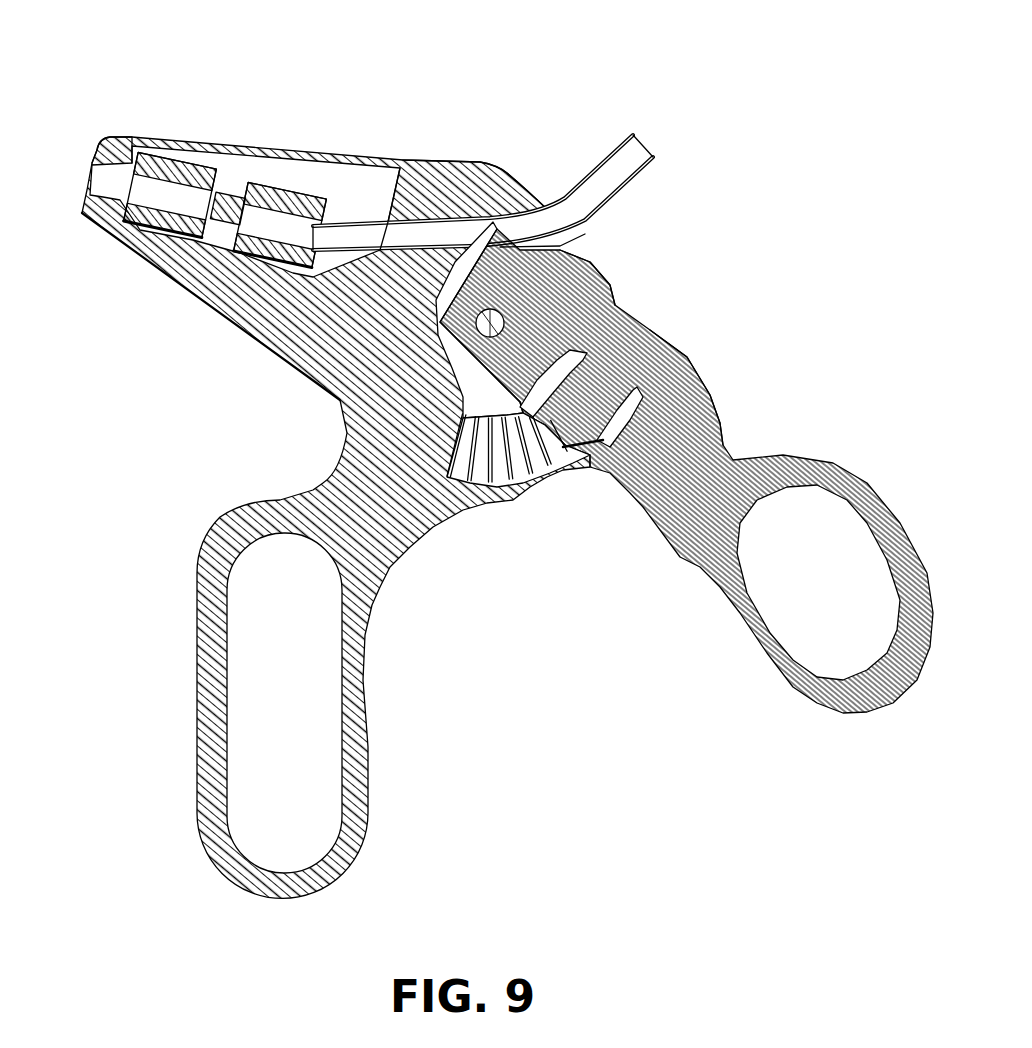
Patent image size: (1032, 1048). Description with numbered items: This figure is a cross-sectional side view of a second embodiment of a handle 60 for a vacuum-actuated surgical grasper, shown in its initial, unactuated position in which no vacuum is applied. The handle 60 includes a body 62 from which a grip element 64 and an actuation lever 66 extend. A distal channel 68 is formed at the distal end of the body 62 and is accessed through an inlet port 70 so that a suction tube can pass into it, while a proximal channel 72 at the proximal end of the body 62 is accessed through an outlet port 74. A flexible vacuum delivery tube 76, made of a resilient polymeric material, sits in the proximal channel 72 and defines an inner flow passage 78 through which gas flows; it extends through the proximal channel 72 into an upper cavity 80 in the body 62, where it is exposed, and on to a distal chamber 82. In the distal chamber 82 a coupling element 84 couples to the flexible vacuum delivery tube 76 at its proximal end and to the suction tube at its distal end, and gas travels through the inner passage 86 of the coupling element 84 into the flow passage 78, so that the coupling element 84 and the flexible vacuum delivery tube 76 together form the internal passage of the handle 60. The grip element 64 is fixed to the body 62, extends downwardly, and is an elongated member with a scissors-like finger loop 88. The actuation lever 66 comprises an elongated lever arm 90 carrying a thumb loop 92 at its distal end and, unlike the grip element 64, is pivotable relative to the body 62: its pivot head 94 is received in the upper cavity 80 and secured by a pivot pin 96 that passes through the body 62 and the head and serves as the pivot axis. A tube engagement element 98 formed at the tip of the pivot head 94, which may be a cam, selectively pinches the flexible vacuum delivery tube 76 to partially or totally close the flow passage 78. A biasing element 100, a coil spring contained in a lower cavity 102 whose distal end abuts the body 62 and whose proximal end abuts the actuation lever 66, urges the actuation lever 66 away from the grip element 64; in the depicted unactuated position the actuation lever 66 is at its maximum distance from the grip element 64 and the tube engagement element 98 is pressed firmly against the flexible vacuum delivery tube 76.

The handle 60 is at (108, 56).
The body 62 is at (418, 160).
The grip element 64 is at (165, 772).
The actuation lever 66 is at (668, 602).
The distal channel 68 is at (95, 178).
The inlet port 70 is at (77, 158).
The proximal channel 72 is at (533, 210).
The outlet port 74 is at (588, 235).
The flexible vacuum delivery tube 76 is at (621, 184).
The inner flow passage 78 is at (594, 192).
The upper cavity 80 is at (518, 437).
The distal chamber 82 is at (347, 217).
The coupling element 84 is at (283, 190).
The inner passage 86 is at (180, 195).
The finger loop 88 is at (367, 840).
The lever arm 90 is at (720, 420).
The thumb loop 92 is at (756, 664).
The pivot head 94 is at (548, 293).
The pivot pin 96 is at (483, 332).
The tube engagement element 98 is at (494, 236).
The biasing element 100 is at (548, 456).
The lower cavity 102 is at (507, 470).